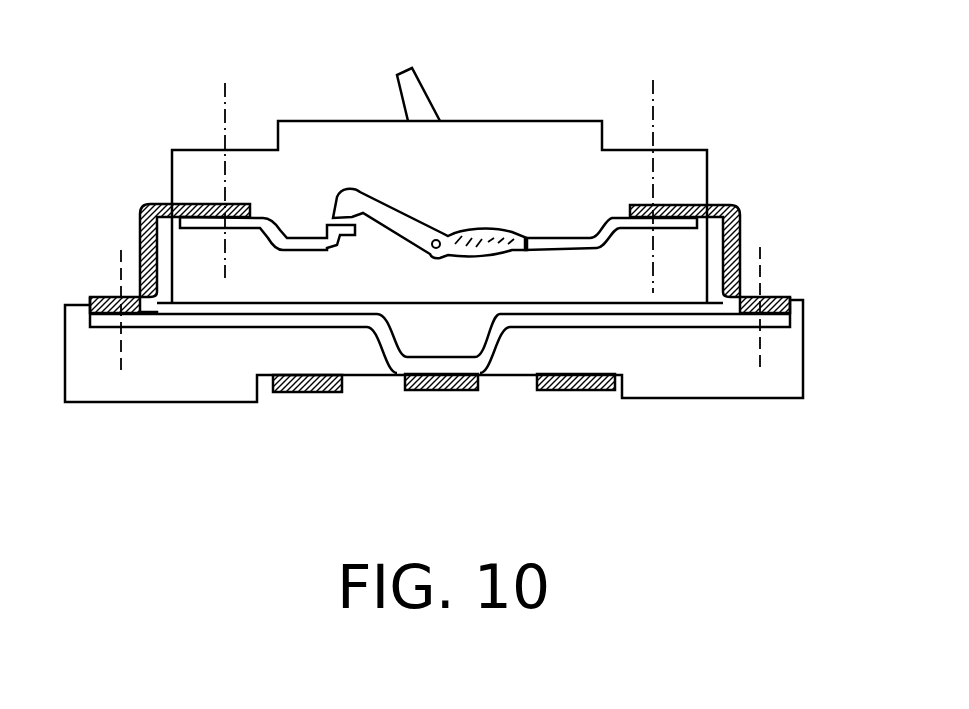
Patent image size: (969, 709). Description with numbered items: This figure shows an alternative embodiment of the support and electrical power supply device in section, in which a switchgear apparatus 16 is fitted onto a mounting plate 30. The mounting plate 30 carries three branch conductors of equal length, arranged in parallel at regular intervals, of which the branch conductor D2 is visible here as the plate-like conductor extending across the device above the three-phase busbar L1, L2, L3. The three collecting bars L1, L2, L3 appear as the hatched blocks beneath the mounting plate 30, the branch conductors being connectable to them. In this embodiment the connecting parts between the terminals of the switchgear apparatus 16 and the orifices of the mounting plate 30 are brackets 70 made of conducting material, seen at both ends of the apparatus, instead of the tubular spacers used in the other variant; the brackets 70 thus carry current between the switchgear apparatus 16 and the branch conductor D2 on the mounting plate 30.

The switchgear apparatus 16 is at (688, 168).
The bracket 70 is at (142, 212).
The mounting plate 30 is at (775, 380).
The branch conductor D2 is at (685, 324).
The busbar L1 is at (303, 393).
The busbar L2 is at (437, 392).
The busbar L3 is at (568, 392).